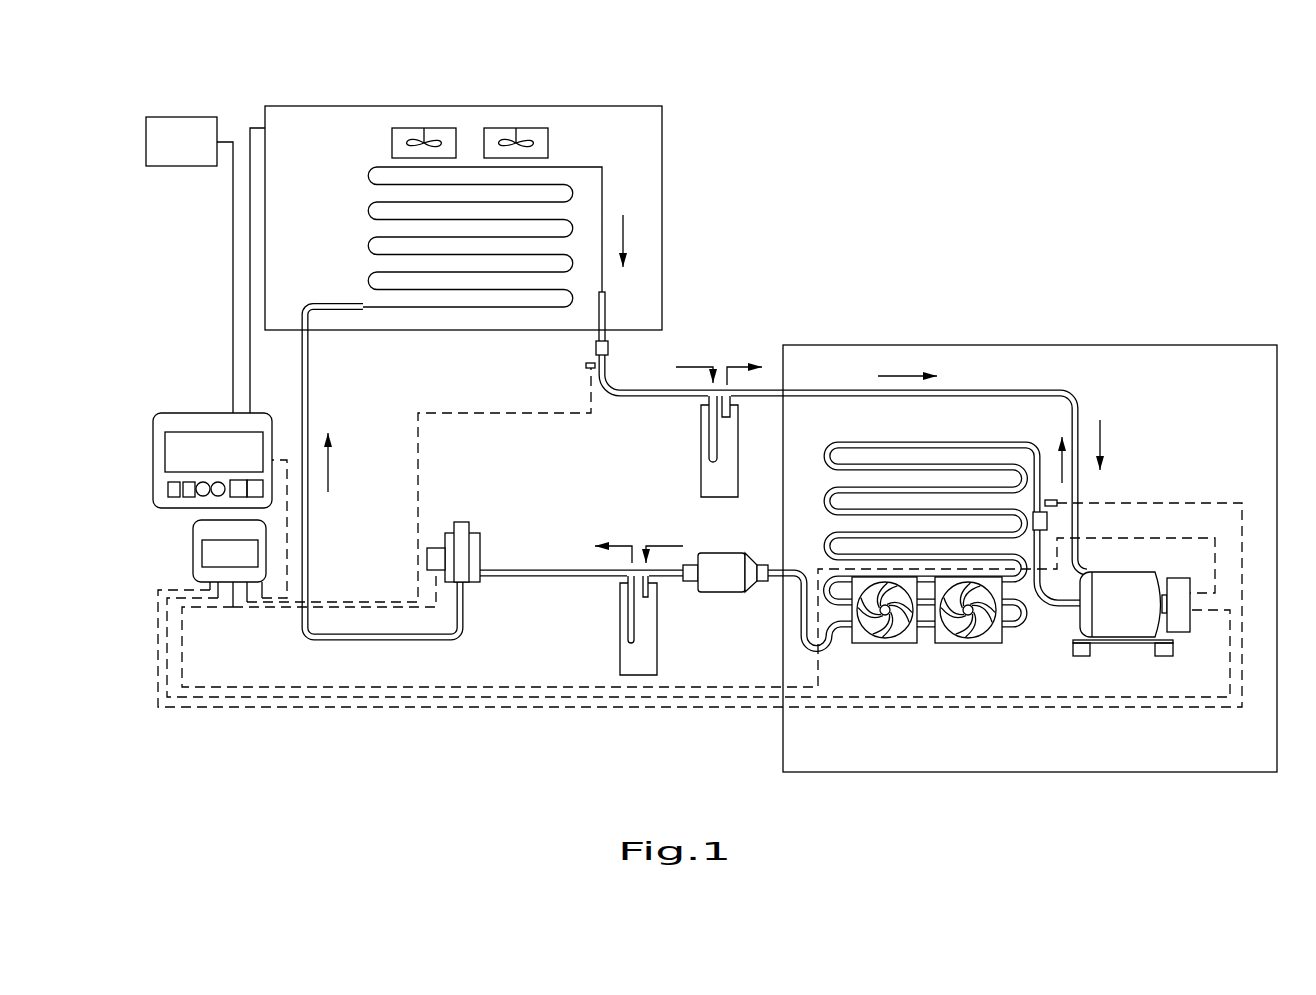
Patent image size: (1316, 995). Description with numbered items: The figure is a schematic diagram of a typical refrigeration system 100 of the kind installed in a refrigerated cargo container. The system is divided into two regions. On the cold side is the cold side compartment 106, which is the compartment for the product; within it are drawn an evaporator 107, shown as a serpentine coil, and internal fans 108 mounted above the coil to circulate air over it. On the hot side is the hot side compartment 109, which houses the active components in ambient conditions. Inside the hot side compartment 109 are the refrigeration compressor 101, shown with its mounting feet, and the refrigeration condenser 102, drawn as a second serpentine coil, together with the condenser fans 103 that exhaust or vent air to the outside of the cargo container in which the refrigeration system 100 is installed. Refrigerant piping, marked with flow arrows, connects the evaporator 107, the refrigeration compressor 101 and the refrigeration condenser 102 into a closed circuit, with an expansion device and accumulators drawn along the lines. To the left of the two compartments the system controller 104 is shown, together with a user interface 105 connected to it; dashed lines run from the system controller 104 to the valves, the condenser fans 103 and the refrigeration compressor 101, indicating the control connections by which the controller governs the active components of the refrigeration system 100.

The refrigeration system 100 is at (1055, 186).
The refrigeration compressor 101 is at (1125, 653).
The refrigeration condenser 102 is at (1008, 427).
The condenser fans 103 is at (888, 645).
The system controller 104 is at (183, 552).
The user interface 105 is at (180, 393).
The cold side compartment 106 is at (688, 134).
The evaporator 107 is at (365, 162).
The internal fans 108 is at (496, 118).
The hot side compartment 109 is at (1203, 343).